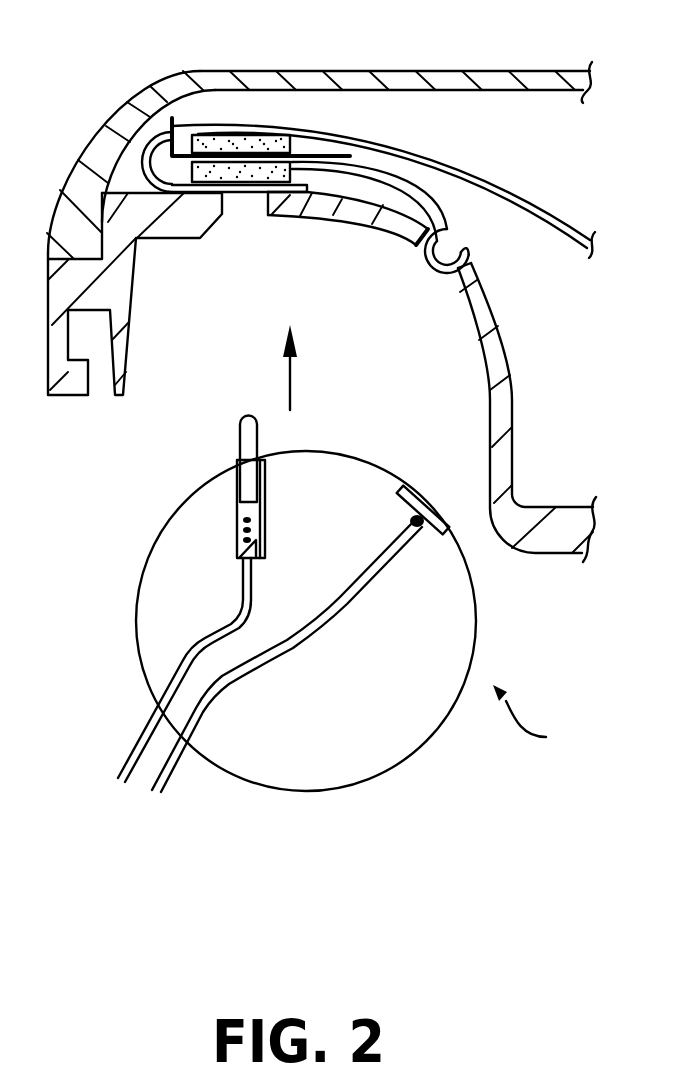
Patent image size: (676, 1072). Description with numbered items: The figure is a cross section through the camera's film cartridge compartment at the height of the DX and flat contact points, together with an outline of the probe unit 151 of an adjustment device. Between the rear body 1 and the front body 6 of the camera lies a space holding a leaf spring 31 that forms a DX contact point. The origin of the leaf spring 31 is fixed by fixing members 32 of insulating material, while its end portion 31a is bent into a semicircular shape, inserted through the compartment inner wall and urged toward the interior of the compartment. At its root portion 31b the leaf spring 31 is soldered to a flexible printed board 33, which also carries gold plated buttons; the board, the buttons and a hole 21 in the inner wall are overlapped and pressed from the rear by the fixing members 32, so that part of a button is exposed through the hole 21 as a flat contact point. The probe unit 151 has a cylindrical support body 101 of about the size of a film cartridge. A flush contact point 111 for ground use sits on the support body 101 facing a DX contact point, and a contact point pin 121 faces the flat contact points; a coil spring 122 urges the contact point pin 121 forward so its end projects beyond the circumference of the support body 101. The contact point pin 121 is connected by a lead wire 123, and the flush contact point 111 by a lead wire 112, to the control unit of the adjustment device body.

The rear body 1 is at (535, 507).
The front body 6 is at (77, 189).
The hole 21 is at (240, 210).
The leaf spring 31 is at (352, 153).
The end portion 31a is at (433, 272).
The root portion 31b is at (181, 128).
The fixing member 32 is at (258, 173).
The flexible printed board 33 is at (458, 160).
The support body 101 is at (387, 735).
The flush contact point 111 is at (437, 512).
The lead wire 112 is at (171, 770).
The contact point pin 121 is at (242, 443).
The coil spring 122 is at (237, 556).
The lead wire 123 is at (143, 746).
The probe unit 151 is at (545, 723).